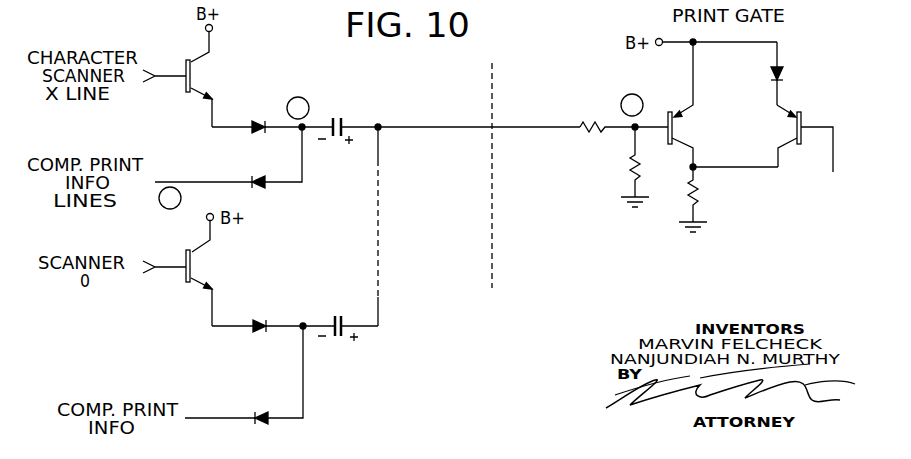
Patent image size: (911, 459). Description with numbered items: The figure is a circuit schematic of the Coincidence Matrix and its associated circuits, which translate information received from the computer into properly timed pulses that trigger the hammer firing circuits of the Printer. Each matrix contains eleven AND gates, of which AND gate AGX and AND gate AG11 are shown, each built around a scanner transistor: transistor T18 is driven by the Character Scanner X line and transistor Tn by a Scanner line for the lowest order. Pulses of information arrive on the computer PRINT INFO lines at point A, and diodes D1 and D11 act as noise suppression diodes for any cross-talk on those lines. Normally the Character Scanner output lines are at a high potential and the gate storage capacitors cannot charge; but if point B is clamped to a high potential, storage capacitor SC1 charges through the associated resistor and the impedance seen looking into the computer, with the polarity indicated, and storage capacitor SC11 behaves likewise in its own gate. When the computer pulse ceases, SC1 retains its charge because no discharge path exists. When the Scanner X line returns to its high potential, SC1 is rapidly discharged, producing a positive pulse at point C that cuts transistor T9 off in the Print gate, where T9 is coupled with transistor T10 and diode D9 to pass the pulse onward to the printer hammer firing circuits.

The character scanner X line transistor T18 is at (189, 80).
The scanner 0 transistor Tn is at (187, 274).
The transistor T9 is at (690, 104).
The print gate transistor T10 is at (792, 138).
The noise suppression diode D1 is at (222, 162).
The noise suppression diode D11 is at (237, 372).
The print gate diode D9 is at (791, 73).
The gate storage capacitor SC1 is at (340, 122).
The storage capacitor SC11 is at (339, 319).
The AND gate AGX is at (234, 154).
The AND gate 11 AG11 is at (209, 372).
The terminal A is at (170, 198).
The point B is at (298, 113).
The point C is at (632, 112).